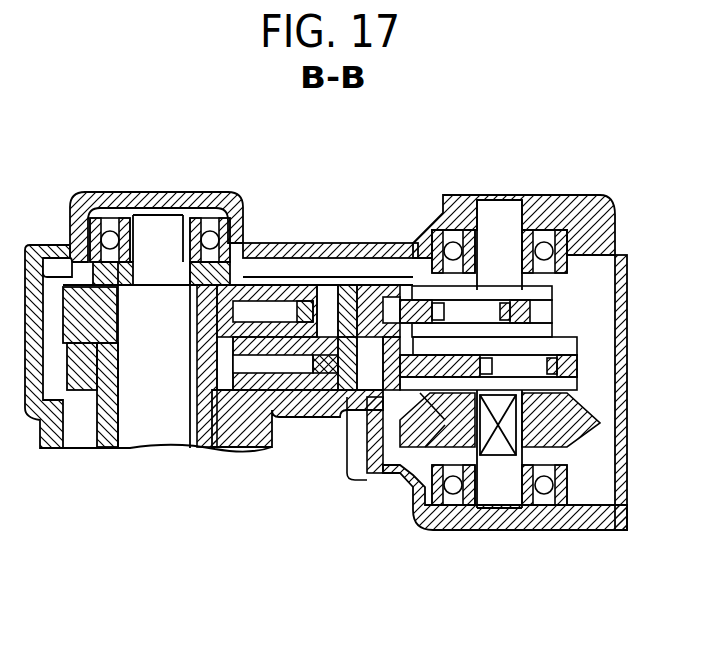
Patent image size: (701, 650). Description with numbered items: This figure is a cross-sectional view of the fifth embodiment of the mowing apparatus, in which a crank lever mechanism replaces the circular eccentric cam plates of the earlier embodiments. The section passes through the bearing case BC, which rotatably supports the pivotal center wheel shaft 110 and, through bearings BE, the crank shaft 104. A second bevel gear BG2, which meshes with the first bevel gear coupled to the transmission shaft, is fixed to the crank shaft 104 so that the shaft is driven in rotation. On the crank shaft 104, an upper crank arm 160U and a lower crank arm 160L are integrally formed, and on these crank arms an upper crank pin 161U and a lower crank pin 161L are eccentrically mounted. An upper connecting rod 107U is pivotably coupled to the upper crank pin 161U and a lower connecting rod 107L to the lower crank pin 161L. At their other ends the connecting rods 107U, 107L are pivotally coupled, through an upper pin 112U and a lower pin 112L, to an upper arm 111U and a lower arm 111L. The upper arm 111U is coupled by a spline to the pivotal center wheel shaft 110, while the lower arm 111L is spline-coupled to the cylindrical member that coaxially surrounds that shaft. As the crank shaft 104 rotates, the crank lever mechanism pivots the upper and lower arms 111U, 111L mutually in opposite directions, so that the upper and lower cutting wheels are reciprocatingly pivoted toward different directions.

The bearings BE is at (110, 237).
The bearing case BC is at (270, 250).
The pivotal center wheel shaft 110 is at (135, 435).
The upper arm 111U is at (262, 293).
The lower arm 111L is at (260, 386).
The upper pin 112U is at (308, 298).
The lower pin 112L is at (350, 372).
The upper connecting rod 107U is at (388, 303).
The lower connecting rod 107L is at (362, 450).
The crank shaft 104 is at (500, 225).
The upper crank arm 160U is at (490, 293).
The upper crank pin 161U is at (485, 310).
The lower crank pin 161L is at (540, 368).
The lower crank arm 160L is at (560, 385).
The second bevel gear BG2 is at (420, 425).